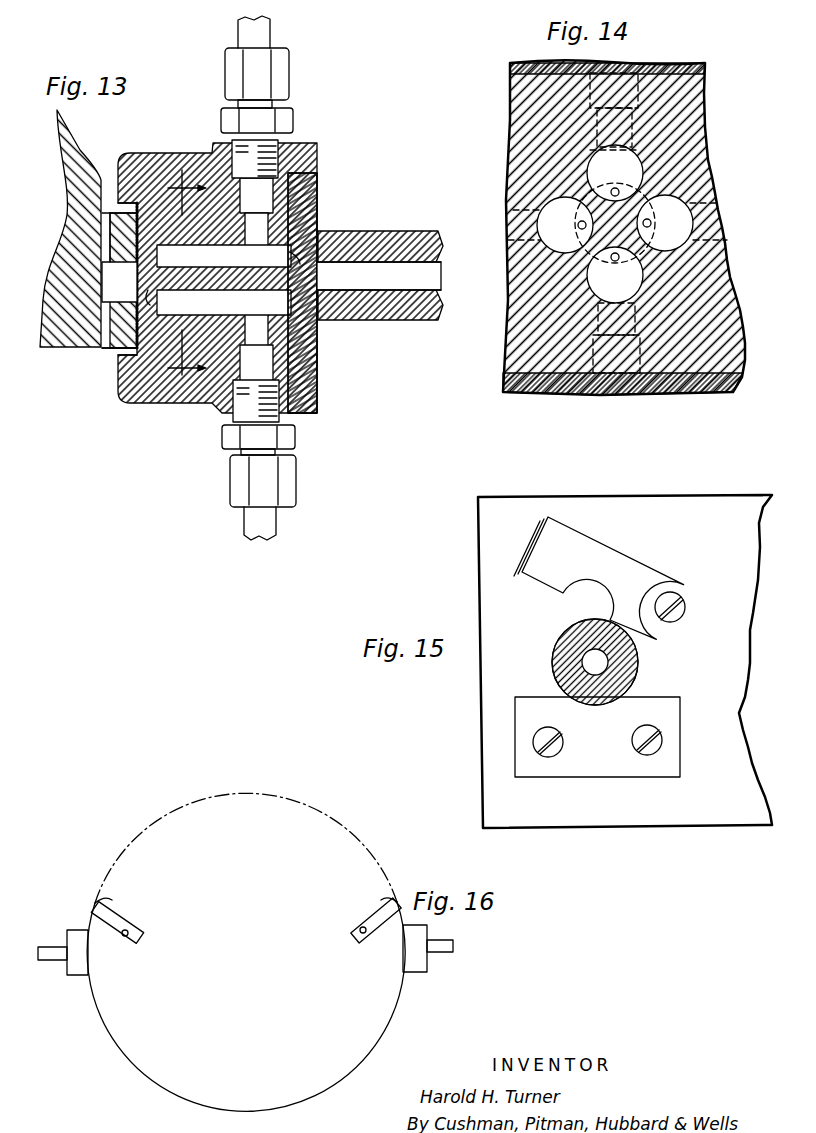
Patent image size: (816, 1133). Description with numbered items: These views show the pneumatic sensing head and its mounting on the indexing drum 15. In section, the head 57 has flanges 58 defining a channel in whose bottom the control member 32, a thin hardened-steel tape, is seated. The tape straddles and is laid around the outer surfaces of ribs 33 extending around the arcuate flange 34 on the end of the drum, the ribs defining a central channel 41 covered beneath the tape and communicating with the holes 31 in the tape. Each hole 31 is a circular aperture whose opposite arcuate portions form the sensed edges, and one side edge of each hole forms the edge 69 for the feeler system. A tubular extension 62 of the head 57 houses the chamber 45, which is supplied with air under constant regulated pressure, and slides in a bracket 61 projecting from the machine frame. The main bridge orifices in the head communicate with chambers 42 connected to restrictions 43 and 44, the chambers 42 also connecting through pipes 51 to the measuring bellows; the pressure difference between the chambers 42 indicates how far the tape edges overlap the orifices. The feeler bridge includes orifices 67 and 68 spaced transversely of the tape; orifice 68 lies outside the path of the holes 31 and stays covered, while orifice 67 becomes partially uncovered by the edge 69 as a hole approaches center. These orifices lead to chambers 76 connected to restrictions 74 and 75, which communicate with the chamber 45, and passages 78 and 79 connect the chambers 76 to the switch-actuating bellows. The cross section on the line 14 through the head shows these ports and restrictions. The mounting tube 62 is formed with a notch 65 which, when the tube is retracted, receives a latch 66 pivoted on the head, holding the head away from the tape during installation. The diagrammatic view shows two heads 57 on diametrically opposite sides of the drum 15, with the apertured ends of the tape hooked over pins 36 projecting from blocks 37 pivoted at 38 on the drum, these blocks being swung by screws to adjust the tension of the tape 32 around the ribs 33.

In FIG. 13, the section line 14— 14 is at (189, 284).
In FIG. 16, the drum 15 is at (168, 805).
In FIG. 13, the holes 31 is at (140, 290).
In FIG. 13, the control member 32 is at (140, 232).
In FIG. 16, the control member 32 is at (368, 1055).
In FIG. 13, the ribs 33 is at (137, 277).
In FIG. 13, the arcuate flange 34 is at (62, 345).
In FIG. 16, the pins 36 is at (95, 903).
In FIG. 16, the blocks 37 is at (124, 912).
In FIG. 16, the pivot 38 is at (123, 937).
In FIG. 13, the central channel 41 is at (103, 296).
In FIG. 13, the chambers 42 is at (112, 349).
In FIG. 14, the chambers 42 is at (682, 230).
In FIG. 14, the restriction 43 is at (578, 225).
In FIG. 14, the restriction 44 is at (652, 223).
In FIG. 13, the chamber 45 is at (436, 276).
In FIG. 14, the chamber 45 is at (650, 181).
In FIG. 15, the chamber 45 is at (608, 664).
In FIG. 14, the pipes 51 is at (520, 203).
In FIG. 16, the head 57 is at (74, 928).
In FIG. 13, the flanges 58 is at (160, 153).
In FIG. 15, the bracket 61 is at (678, 502).
In FIG. 13, the tubular extension 62 is at (380, 240).
In FIG. 15, the tubular extension 62 is at (553, 664).
In FIG. 15, the notch 65 is at (575, 641).
In FIG. 15, the latch 66 is at (631, 561).
In FIG. 13, the orifice 67 is at (224, 256).
In FIG. 13, the orifice 68 is at (160, 316).
In FIG. 13, the edge 69 is at (116, 246).
In FIG. 13, the restriction 74 is at (297, 298).
In FIG. 14, the restriction 74 is at (615, 261).
In FIG. 13, the restriction 75 is at (297, 258).
In FIG. 14, the restriction 75 is at (616, 188).
In FIG. 13, the chambers 76 is at (219, 250).
In FIG. 14, the chambers 76 is at (595, 172).
In FIG. 13, the passage 78 is at (245, 526).
In FIG. 14, the passage 78 is at (640, 327).
In FIG. 13, the passage 79 is at (273, 40).
In FIG. 14, the passage 79 is at (636, 118).